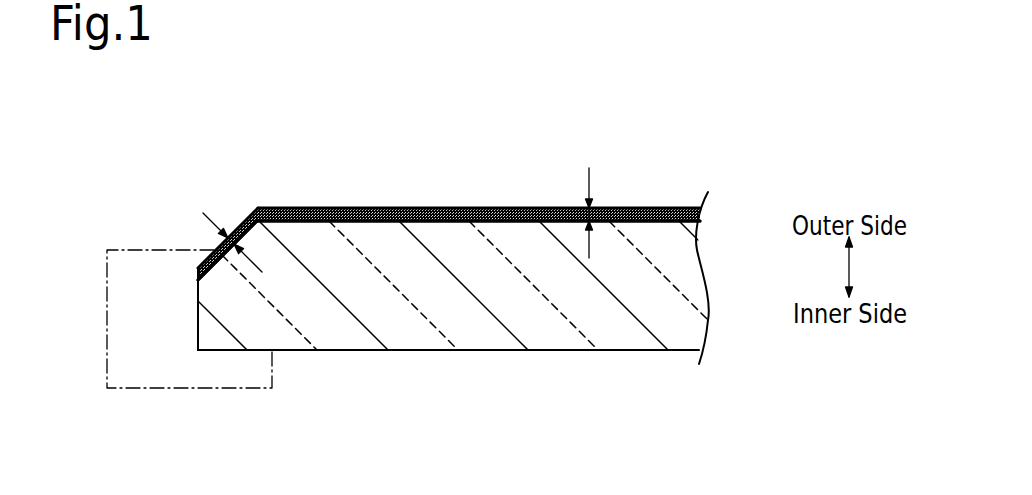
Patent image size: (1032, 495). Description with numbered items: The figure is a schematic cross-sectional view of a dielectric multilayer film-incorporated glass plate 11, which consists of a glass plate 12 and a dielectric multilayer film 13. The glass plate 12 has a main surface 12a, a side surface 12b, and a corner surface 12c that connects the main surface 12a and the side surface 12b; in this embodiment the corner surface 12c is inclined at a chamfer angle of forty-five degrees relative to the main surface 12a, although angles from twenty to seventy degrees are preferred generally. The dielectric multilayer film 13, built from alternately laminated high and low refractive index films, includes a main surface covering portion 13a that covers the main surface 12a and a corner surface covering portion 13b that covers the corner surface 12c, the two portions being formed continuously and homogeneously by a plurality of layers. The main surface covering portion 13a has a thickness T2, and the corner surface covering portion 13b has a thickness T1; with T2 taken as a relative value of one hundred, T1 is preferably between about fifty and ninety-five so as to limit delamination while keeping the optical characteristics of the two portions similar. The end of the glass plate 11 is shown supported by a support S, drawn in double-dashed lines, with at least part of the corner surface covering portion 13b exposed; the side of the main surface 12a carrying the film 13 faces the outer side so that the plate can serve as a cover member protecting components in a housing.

The dielectric multilayer film-incorporated glass plate 11 is at (292, 138).
The glass plate 12 is at (697, 250).
The main surface 12a is at (643, 208).
The side surface 12b is at (198, 296).
The corner surface 12c is at (239, 238).
The dielectric multilayer film 13 is at (487, 208).
The main surface covering portion 13a is at (382, 208).
The corner surface covering portion 13b is at (226, 234).
The support S is at (124, 250).
The thickness of corner surface covering portion T1 is at (222, 237).
The thickness of main surface covering portion T2 is at (586, 209).